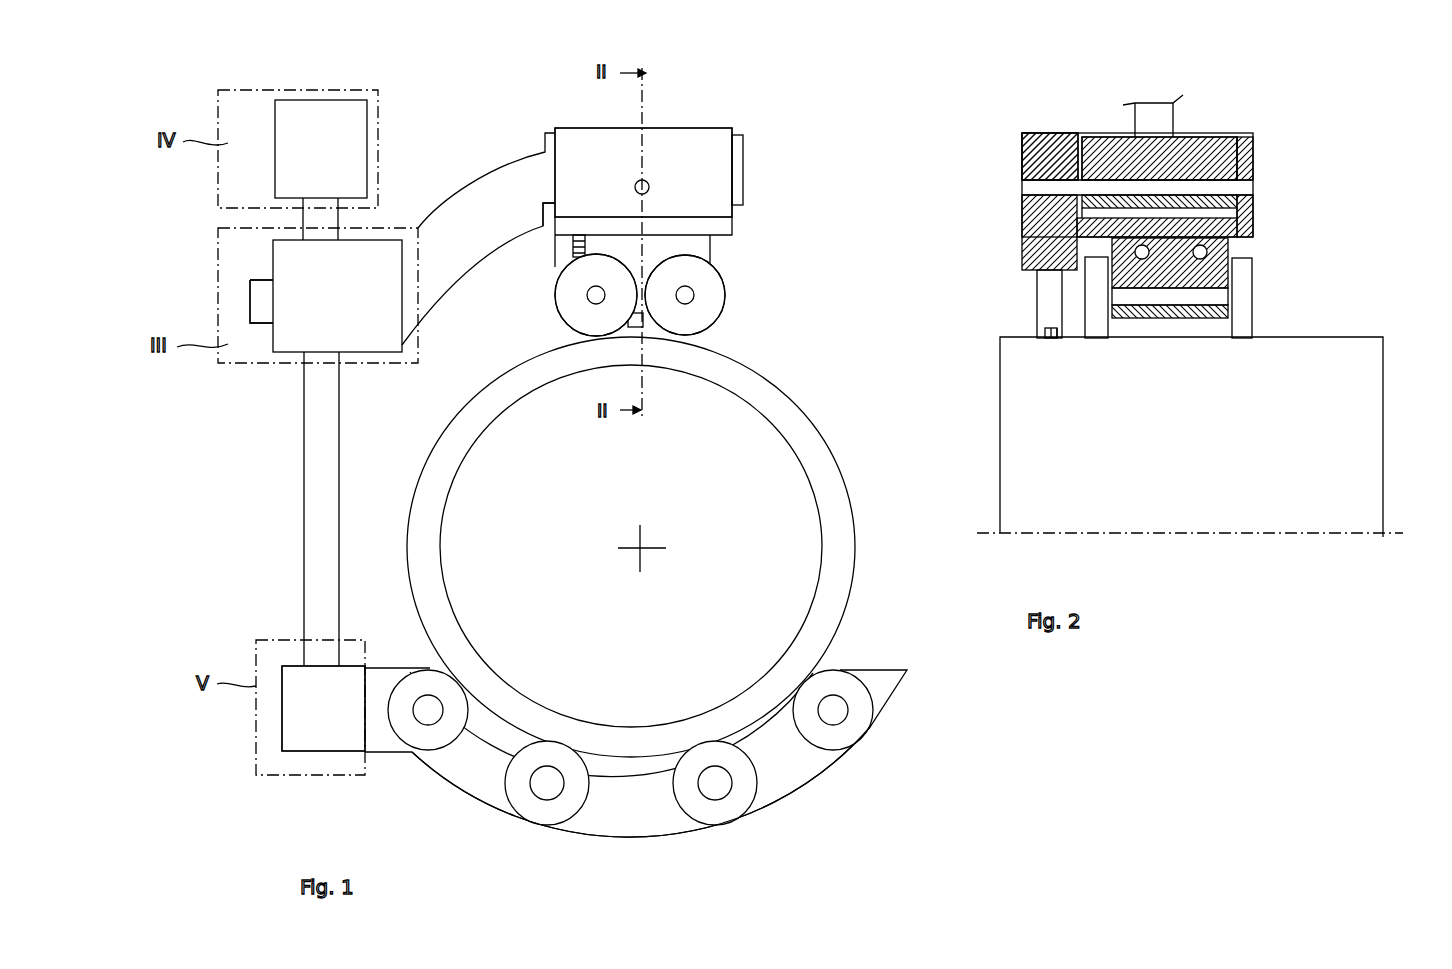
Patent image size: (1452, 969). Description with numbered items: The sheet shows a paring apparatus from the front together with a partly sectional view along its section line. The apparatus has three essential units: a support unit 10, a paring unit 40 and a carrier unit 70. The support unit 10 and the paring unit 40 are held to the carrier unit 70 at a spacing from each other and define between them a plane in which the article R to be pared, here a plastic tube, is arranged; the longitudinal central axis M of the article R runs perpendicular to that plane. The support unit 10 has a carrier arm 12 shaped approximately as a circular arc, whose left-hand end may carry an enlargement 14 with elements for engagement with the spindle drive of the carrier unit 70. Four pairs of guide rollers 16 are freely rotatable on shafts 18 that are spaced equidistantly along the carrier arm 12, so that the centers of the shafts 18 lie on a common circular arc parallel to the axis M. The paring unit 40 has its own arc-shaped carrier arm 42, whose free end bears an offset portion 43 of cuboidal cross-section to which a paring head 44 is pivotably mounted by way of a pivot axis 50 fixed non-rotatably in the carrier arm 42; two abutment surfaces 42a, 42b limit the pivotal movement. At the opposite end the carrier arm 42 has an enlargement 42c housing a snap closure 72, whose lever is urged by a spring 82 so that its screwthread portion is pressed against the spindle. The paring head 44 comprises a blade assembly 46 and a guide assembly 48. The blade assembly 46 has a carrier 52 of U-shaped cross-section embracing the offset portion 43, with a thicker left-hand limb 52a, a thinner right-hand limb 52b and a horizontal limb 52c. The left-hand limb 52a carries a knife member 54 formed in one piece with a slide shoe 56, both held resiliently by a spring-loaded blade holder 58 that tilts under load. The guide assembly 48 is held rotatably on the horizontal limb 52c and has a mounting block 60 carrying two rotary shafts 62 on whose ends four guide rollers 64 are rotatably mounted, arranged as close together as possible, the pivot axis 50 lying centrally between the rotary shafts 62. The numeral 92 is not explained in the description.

In FIG. 1, the support unit 10 is at (455, 797).
In FIG. 1, the carrier arm 12 is at (625, 838).
In FIG. 1, the enlargement 14 is at (297, 745).
In FIG. 1, the guide rollers 16 is at (735, 805).
In FIG. 1, the shafts 18 is at (840, 712).
In FIG. 1, the paring unit 40 is at (463, 183).
In FIG. 1, the carrier arm 42 is at (446, 282).
In FIG. 1, the abutment surface 42a is at (543, 228).
In FIG. 1, the abutment surface 42b is at (743, 205).
In FIG. 1, the enlargement 42c is at (326, 275).
In FIG. 1, the offset portion 43 is at (553, 128).
In FIG. 2, the offset portion 43 is at (1193, 137).
In FIG. 2, the paring head 44 is at (1262, 150).
In FIG. 2, the blade assembly 46 is at (1030, 168).
In FIG. 2, the guide assembly 48 is at (1228, 243).
In FIG. 1, the pivot axis 50 is at (650, 187).
In FIG. 2, the pivot axis 50 is at (1255, 190).
In FIG. 1, the carrier 52 is at (710, 150).
In FIG. 2, the carrier 52 is at (1072, 138).
In FIG. 2, the left-hand limb 52a is at (1030, 136).
In FIG. 2, the right-hand limb 52b is at (1245, 137).
In FIG. 2, the horizontal limb 52c is at (1255, 216).
In FIG. 2, the knife member 54 is at (1050, 338).
In FIG. 2, the slide shoe 56 is at (1058, 338).
In FIG. 2, the blade holder 58 is at (1045, 294).
In FIG. 2, the mounting block 60 is at (1225, 275).
In FIG. 1, the rotary shafts 62 is at (590, 293).
In FIG. 2, the rotary shafts 62 is at (1170, 300).
In FIG. 1, the guide rollers 64 is at (580, 318).
In FIG. 2, the guide rollers 64 is at (1246, 330).
In FIG. 1, the carrier unit 70 is at (297, 506).
In FIG. 1, the snap closure 72 is at (250, 288).
In FIG. 1, the spring 82 is at (338, 101).
In FIG. 1, the drive 92 is at (330, 760).
In FIG. 1, the longitudinal central axis M is at (643, 545).
In FIG. 2, the longitudinal central axis M is at (1281, 537).
In FIG. 1, the article to be pared R is at (840, 573).